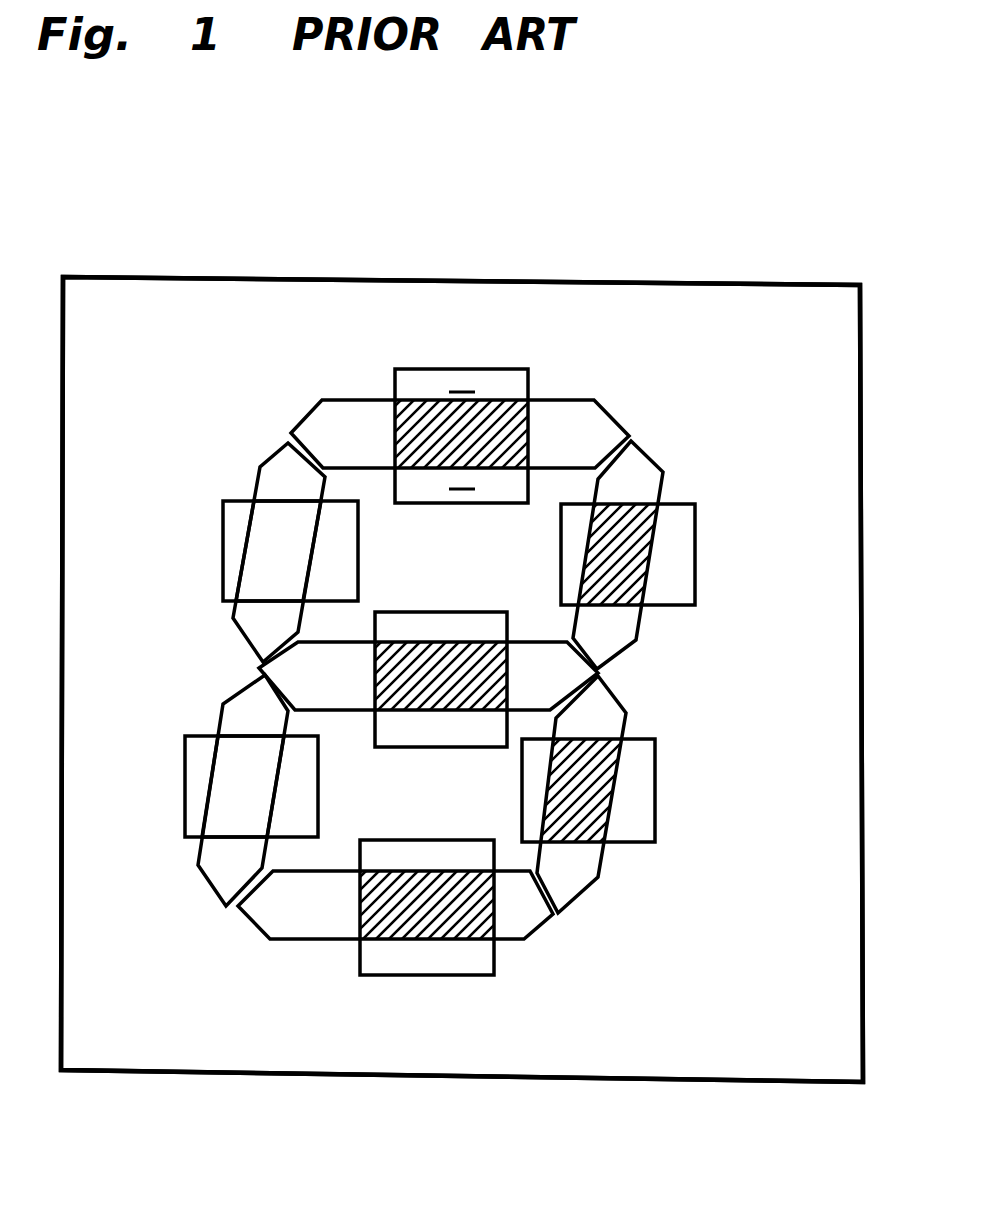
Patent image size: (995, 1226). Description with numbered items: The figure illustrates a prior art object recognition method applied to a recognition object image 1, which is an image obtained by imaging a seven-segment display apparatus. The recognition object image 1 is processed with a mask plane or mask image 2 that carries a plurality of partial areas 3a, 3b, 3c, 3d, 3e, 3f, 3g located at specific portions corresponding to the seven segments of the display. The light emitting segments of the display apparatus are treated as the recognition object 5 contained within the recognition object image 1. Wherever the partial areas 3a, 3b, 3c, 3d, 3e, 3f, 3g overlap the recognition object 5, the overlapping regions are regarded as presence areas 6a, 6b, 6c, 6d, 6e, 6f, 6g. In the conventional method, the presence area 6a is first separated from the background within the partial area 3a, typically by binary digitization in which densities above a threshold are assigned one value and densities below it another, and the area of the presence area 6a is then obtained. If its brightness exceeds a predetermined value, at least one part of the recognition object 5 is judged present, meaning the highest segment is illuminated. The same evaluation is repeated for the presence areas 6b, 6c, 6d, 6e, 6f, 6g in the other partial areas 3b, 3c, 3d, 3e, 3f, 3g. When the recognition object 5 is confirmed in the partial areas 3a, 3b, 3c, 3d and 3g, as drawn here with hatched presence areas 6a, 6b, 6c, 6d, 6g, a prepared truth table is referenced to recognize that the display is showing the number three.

The recognition object image 1 is at (553, 283).
The mask image 2 is at (207, 1042).
The recognition object 5 is at (606, 413).
The partial area 3a is at (445, 368).
The partial area 3b is at (677, 507).
The partial area 3c is at (638, 843).
The partial area 3d is at (417, 977).
The partial area 3e is at (203, 735).
The partial area 3f is at (235, 500).
The partial area 3g is at (473, 747).
The presence area 6a is at (415, 418).
The presence area 6b is at (637, 547).
The presence area 6c is at (572, 820).
The presence area 6d is at (475, 915).
The presence area 6e is at (223, 813).
The presence area 6f is at (267, 572).
The presence area 6g is at (422, 685).